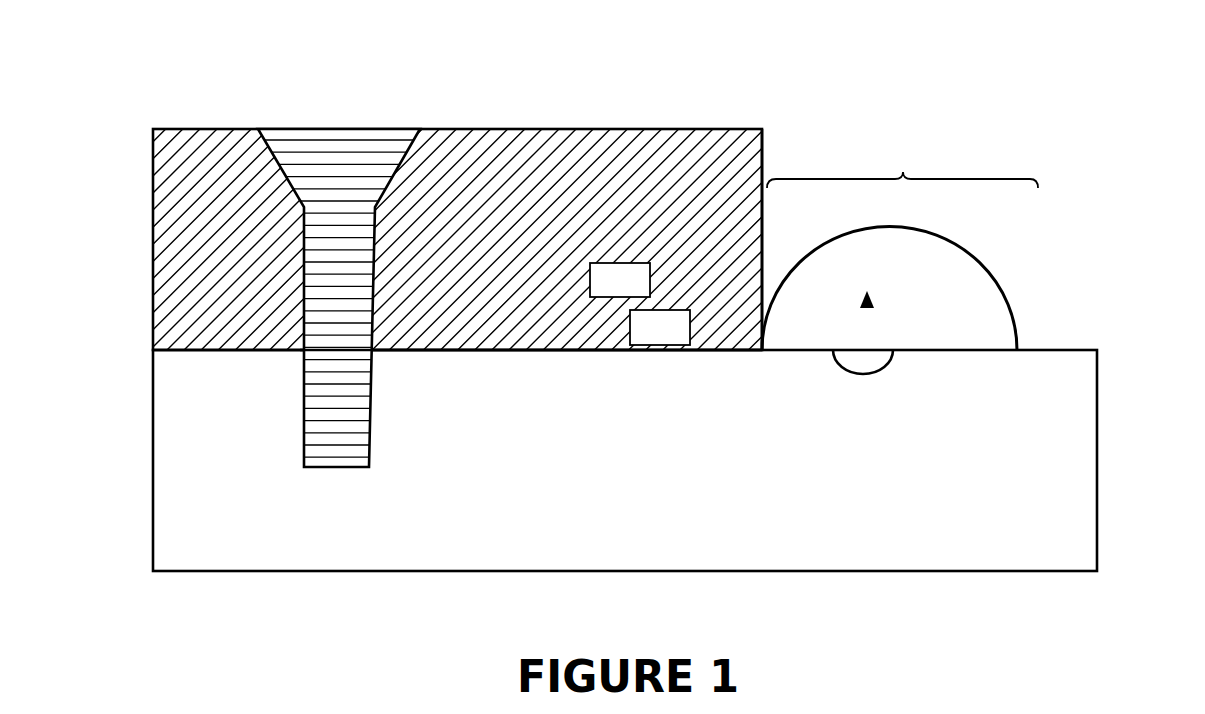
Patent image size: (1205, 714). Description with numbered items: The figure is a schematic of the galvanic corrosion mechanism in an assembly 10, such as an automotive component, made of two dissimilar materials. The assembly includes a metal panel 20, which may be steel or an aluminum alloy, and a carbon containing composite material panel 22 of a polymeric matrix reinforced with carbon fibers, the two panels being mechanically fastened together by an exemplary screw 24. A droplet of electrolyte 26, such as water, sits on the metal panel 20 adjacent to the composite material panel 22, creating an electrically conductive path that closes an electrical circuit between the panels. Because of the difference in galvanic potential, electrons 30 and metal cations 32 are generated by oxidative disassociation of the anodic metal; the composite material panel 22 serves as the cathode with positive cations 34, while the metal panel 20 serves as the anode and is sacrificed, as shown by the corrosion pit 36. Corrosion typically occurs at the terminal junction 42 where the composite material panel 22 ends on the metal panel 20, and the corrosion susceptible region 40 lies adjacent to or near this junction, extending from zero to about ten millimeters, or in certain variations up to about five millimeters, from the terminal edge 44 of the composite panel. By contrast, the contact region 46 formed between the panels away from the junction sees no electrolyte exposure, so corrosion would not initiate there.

The assembly 10 is at (137, 82).
The metal panel 20 is at (153, 462).
The carbon containing composite material panel 22 is at (153, 241).
The screw 24 is at (304, 330).
The droplet of electrolyte 26 is at (1012, 307).
The electrons 30 is at (863, 374).
The metal cations 32 is at (867, 373).
The positive cations 34 is at (640, 304).
The corrosion pit 36 is at (890, 365).
The corrosion susceptible region 40 is at (902, 165).
The terminal junction 42 is at (783, 333).
The terminal edge 44 is at (763, 158).
The contact region 46 is at (453, 355).